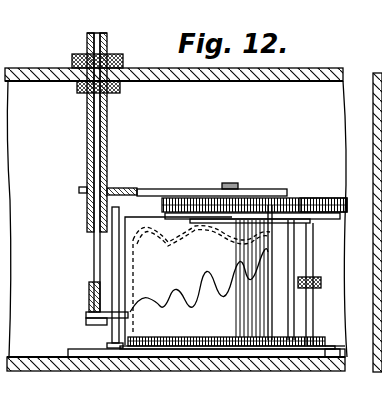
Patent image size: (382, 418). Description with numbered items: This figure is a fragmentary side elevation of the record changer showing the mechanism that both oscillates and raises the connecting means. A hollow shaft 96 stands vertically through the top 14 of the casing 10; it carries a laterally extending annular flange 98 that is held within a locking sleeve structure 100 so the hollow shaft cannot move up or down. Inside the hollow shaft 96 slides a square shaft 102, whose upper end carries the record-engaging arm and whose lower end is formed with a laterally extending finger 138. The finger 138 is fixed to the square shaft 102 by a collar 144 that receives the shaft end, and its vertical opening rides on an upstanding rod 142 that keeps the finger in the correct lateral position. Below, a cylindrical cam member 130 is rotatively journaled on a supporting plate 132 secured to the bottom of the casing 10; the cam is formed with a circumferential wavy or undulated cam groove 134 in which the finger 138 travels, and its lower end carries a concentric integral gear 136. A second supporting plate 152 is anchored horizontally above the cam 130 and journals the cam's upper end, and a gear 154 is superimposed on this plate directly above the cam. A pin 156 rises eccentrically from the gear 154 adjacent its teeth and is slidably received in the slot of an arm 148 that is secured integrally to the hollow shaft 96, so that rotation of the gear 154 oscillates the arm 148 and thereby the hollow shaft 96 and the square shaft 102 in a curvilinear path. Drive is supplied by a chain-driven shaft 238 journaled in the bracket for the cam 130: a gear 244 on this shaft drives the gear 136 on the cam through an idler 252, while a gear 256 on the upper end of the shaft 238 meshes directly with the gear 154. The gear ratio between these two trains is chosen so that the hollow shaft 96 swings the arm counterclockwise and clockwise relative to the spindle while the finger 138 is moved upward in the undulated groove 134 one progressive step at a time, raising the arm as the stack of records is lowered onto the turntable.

The casing 10 is at (270, 360).
The top of the casing 14 is at (135, 68).
The hollow shaft 96 is at (87, 124).
The annular flange 98 is at (110, 58).
The locking sleeve structure 100 is at (72, 64).
The square shaft 102 is at (86, 170).
The cylindrical cam member 130 is at (138, 257).
The supporting plate 132 is at (222, 349).
The undulated cam groove 134 is at (209, 281).
The gear 136 is at (172, 349).
The finger 138 is at (106, 345).
The upstanding rod 142 is at (124, 212).
The collar 144 is at (88, 320).
The arm 148 is at (160, 189).
The supporting plate 152 is at (290, 216).
The gear 154 is at (240, 207).
The pin 156 is at (230, 183).
The shaft 238 is at (310, 253).
The gear 244 is at (330, 348).
The idler 252 is at (305, 352).
The gear 256 is at (312, 203).